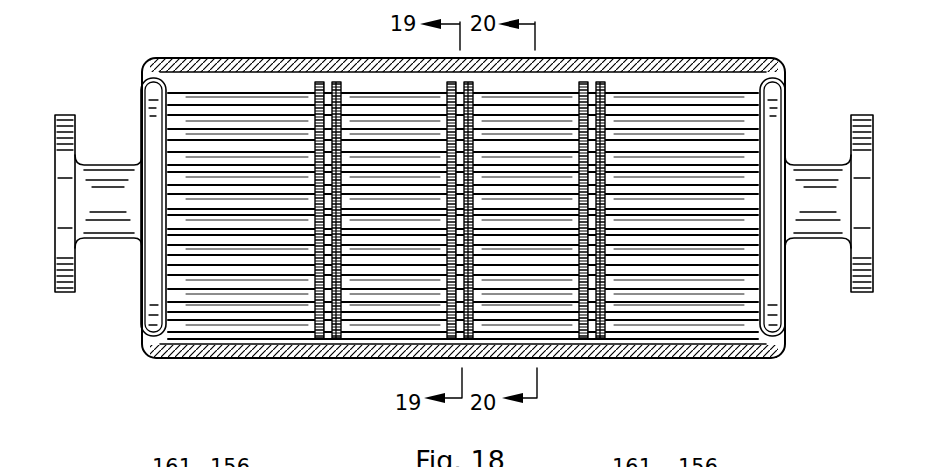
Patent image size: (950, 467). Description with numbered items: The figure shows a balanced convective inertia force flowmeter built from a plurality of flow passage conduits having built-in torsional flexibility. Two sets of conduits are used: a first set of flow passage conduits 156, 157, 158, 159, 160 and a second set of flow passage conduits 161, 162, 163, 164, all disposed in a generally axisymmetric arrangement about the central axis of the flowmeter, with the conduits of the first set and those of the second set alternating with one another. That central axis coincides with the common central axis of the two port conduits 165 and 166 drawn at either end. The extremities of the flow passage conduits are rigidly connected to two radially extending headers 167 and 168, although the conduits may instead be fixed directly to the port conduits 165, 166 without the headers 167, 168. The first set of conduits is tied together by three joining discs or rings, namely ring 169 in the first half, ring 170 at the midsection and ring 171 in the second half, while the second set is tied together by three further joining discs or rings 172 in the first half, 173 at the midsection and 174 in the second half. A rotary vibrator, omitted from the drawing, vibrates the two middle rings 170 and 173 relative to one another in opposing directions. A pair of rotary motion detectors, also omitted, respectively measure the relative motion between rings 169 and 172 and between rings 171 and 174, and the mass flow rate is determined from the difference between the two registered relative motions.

The flow passage conduit 156 is at (285, 100).
The flow passage conduit 157 is at (240, 133).
The flow passage conduit 158 is at (208, 203).
The flow passage conduit 159 is at (208, 273).
The flow passage conduit 160 is at (233, 317).
The flow passage conduit 161 is at (652, 112).
The flow passage conduit 162 is at (682, 167).
The flow passage conduit 163 is at (645, 243).
The flow passage conduit 164 is at (697, 300).
The port conduit 165 is at (112, 197).
The port conduit 166 is at (820, 202).
The radially extending header 167 is at (150, 118).
The radially extending header 168 is at (772, 120).
The joining disc or ring 169 is at (316, 332).
The joining disc or ring 170 is at (447, 333).
The joining disc or ring 171 is at (575, 334).
The joining disc or ring 172 is at (348, 87).
The joining disc or ring 173 is at (477, 88).
The joining disc or ring 174 is at (605, 86).